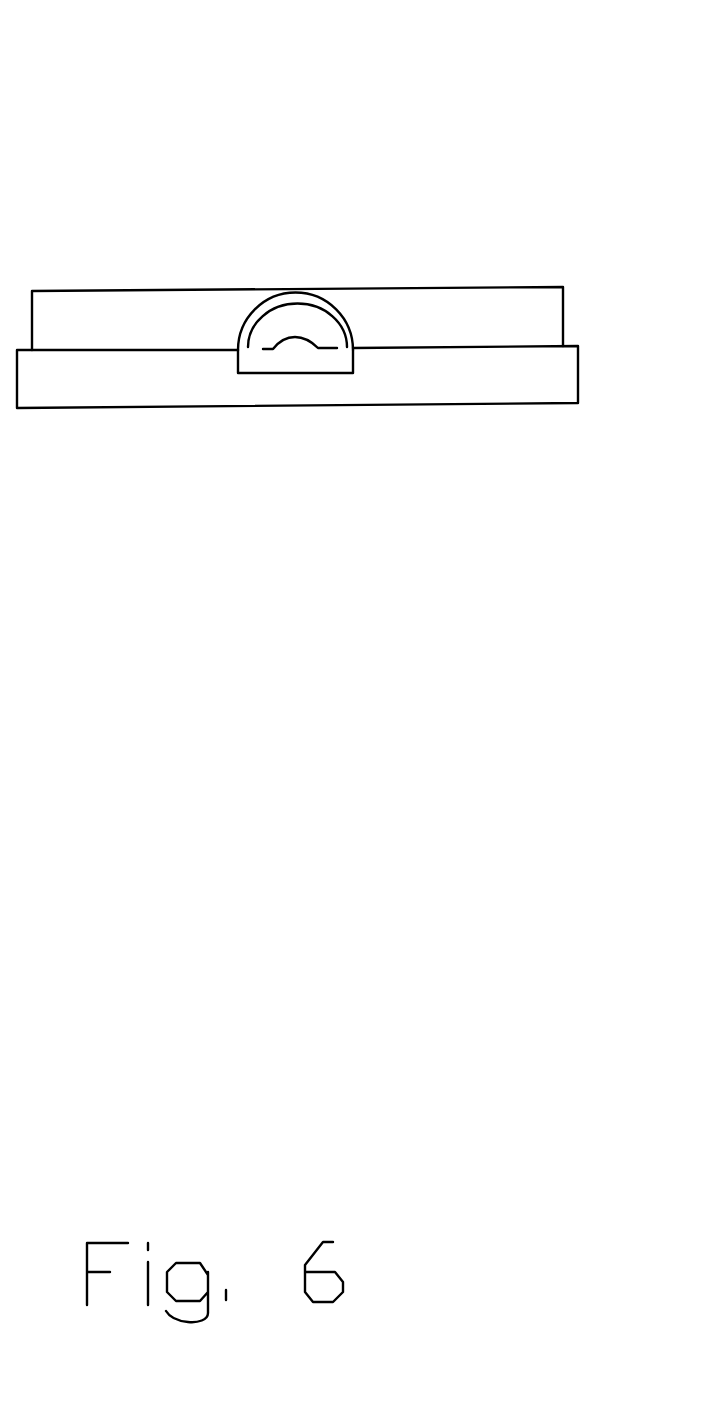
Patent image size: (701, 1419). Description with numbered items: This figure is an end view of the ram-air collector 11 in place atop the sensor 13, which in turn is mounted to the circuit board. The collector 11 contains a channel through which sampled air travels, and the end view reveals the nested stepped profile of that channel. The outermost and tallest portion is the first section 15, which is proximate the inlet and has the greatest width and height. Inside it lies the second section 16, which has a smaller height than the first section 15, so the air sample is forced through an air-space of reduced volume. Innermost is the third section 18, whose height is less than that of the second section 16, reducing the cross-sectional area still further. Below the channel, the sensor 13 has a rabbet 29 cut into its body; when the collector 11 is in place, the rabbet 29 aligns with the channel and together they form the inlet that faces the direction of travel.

The ram-air collector 11 is at (142, 313).
The sensor 13 is at (513, 695).
The first section 15 is at (393, 525).
The second section 16 is at (295, 320).
The third section 18 is at (268, 510).
The rabbet 29 is at (278, 753).